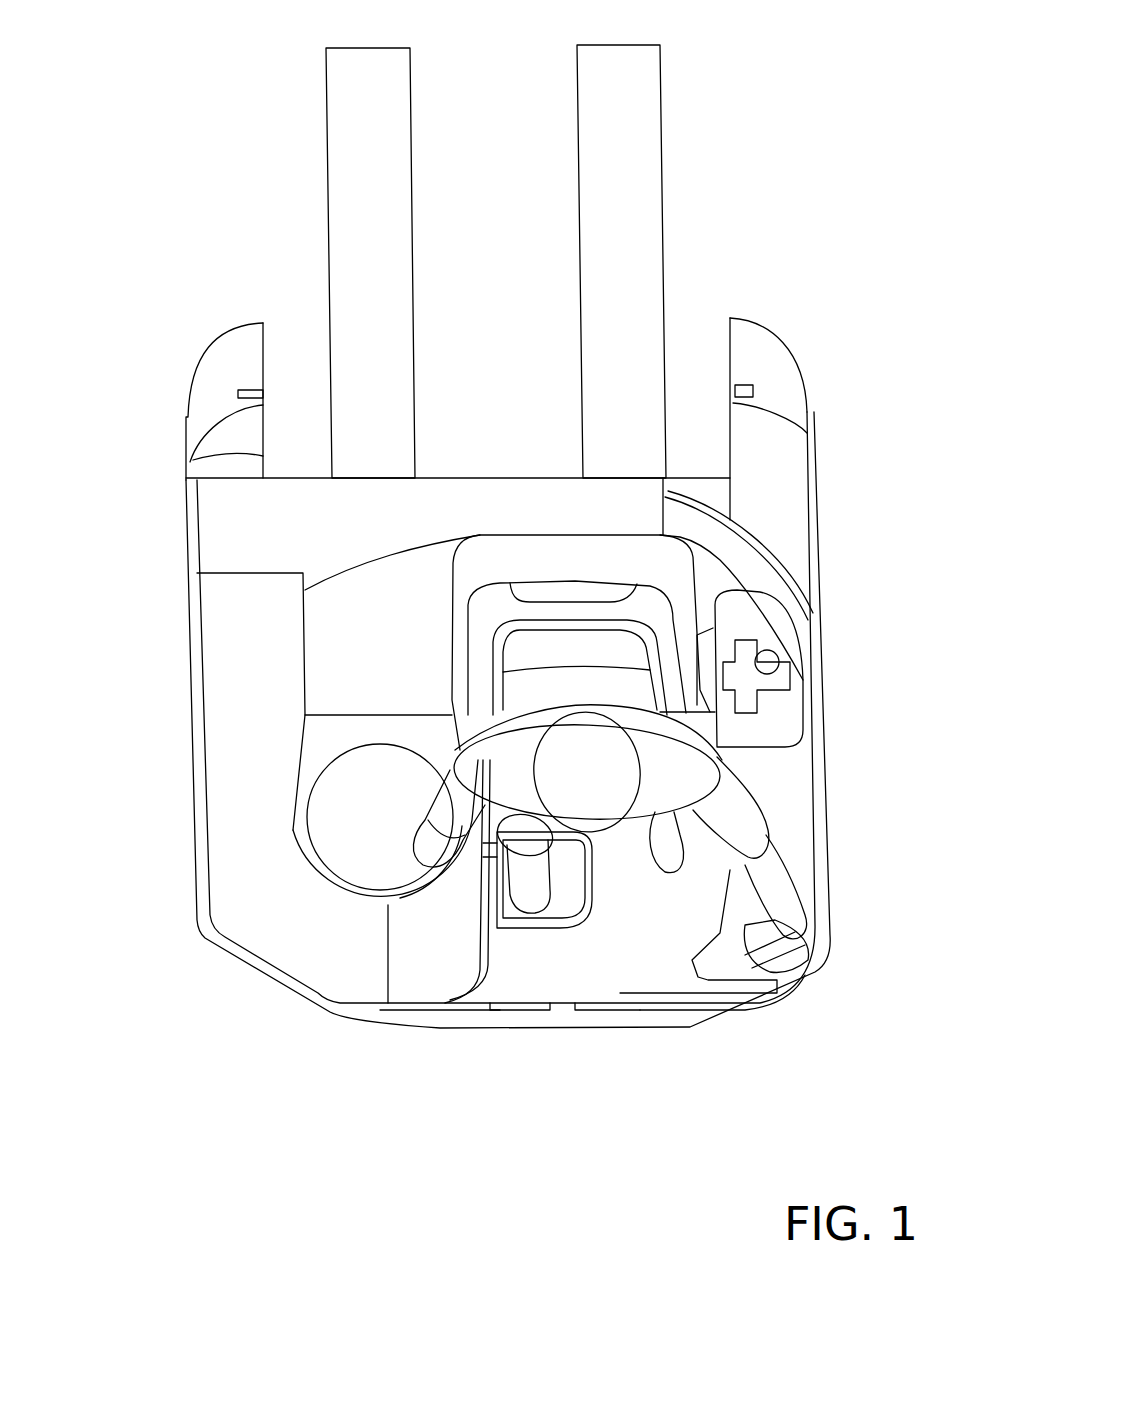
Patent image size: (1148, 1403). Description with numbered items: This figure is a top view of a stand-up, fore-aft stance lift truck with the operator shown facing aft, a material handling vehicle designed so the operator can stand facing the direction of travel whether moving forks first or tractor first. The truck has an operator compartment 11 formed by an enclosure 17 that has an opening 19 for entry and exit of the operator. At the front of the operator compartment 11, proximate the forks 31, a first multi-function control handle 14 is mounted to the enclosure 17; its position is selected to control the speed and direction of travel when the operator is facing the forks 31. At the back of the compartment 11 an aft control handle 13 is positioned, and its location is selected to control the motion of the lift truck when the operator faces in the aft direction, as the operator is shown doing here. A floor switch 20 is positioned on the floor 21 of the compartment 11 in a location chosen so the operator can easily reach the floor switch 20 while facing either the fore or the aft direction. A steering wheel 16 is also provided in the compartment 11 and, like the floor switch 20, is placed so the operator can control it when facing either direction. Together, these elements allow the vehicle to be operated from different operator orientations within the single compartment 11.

The operator compartment 11 is at (838, 805).
The aft control handle 13 is at (820, 957).
The first multi-function control handle 14 is at (803, 678).
The steering wheel 16 is at (310, 845).
The enclosure 17 is at (480, 985).
The opening 19 is at (660, 975).
The floor switch 20 is at (543, 915).
The floor 21 is at (593, 977).
The forks 31 is at (662, 112).